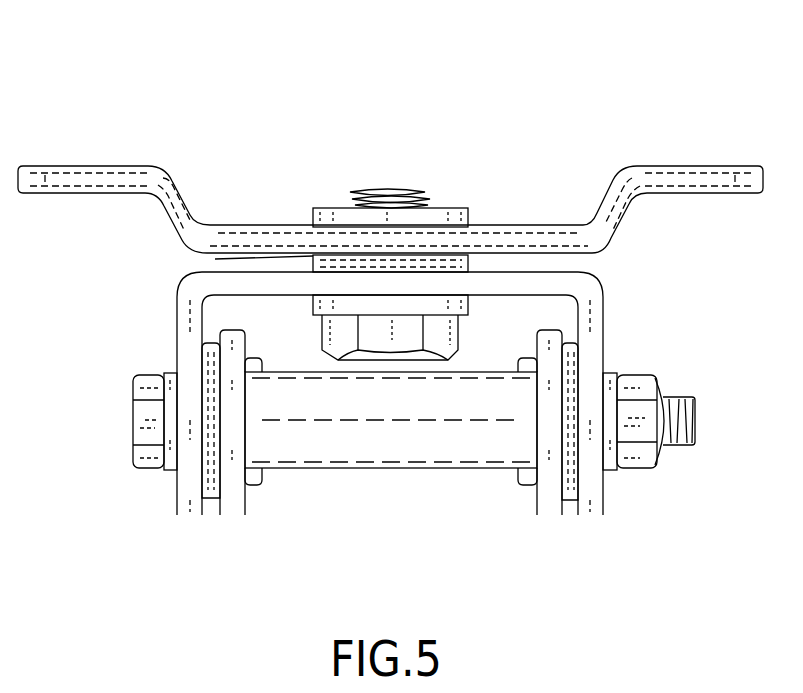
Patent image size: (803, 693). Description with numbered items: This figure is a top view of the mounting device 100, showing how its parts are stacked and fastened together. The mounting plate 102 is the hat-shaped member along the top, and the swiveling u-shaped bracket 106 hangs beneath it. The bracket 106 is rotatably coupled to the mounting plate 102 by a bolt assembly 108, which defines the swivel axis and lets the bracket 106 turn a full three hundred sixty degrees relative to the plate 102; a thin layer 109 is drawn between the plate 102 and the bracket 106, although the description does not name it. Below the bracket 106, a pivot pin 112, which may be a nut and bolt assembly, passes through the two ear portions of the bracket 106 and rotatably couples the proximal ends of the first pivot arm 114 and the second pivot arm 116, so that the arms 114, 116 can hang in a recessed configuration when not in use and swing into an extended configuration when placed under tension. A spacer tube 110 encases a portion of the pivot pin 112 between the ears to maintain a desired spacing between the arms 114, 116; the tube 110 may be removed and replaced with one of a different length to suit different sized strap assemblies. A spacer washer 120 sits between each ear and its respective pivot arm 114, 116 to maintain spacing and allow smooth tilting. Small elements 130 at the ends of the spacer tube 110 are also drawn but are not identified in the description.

The mounting device 100 is at (128, 76).
The mounting plate 102 is at (560, 240).
The u-shaped bracket 106 is at (587, 287).
The bolt assembly 108 is at (388, 188).
The isolator layer 109 is at (215, 259).
The spacer tube 110 is at (376, 456).
The pivot pin 112 is at (693, 423).
The first pivot arm 114 is at (232, 443).
The second pivot arm 116 is at (547, 445).
The spacer washer 120 is at (207, 498).
The retaining tab 130 is at (250, 484).